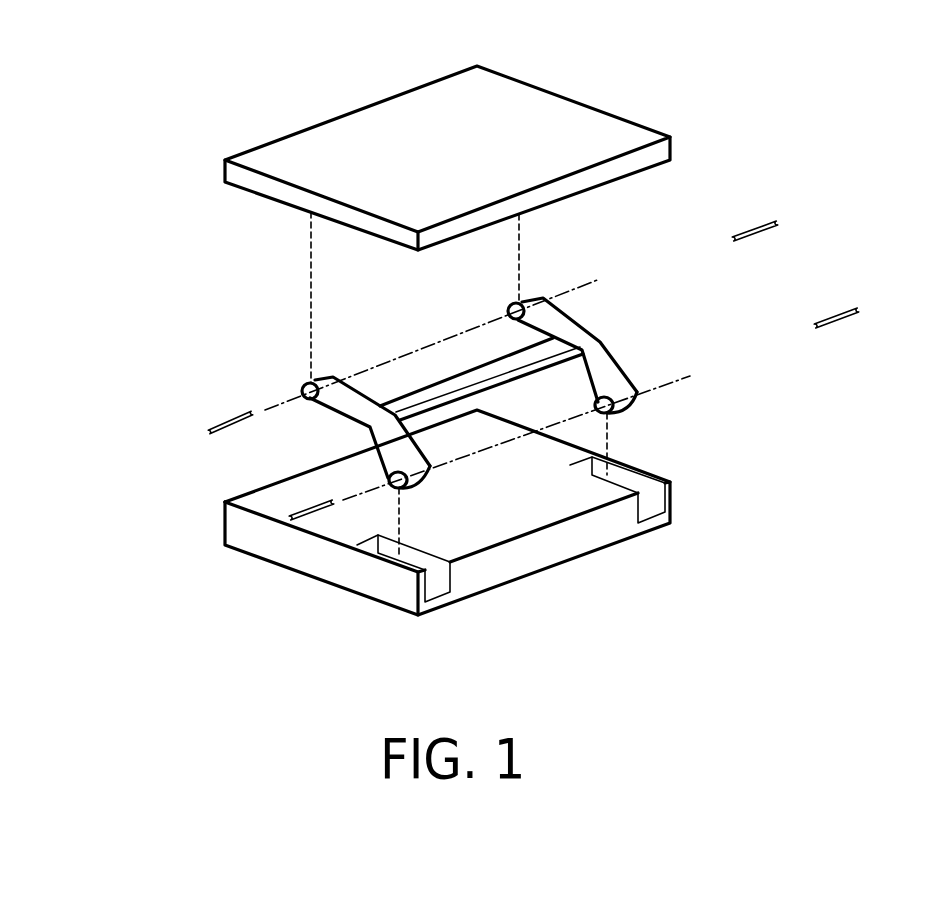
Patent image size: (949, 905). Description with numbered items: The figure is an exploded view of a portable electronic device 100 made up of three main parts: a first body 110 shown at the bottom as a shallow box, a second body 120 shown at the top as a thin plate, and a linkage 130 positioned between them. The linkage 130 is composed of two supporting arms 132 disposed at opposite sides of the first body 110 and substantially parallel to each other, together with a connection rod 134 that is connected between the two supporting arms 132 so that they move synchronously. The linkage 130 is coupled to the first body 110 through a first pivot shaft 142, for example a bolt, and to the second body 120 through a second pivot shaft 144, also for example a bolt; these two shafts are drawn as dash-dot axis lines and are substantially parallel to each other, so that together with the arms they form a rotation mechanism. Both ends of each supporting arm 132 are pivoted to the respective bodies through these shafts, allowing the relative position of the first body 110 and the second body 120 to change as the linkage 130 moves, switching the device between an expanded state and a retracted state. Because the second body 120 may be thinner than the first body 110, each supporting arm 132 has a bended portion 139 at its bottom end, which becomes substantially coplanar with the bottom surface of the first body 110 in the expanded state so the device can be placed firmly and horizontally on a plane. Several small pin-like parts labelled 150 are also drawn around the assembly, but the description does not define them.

The portable electronic device 100 is at (910, 612).
The first body 110 is at (668, 489).
The second body 120 is at (612, 138).
The linkage 130 is at (446, 384).
The supporting arms 132 is at (413, 279).
The connection rod 134 is at (415, 388).
The bended portion 139 is at (604, 341).
The first pivot shaft 142 is at (678, 380).
The second pivot shaft 144 is at (578, 289).
The pins 150 is at (757, 225).